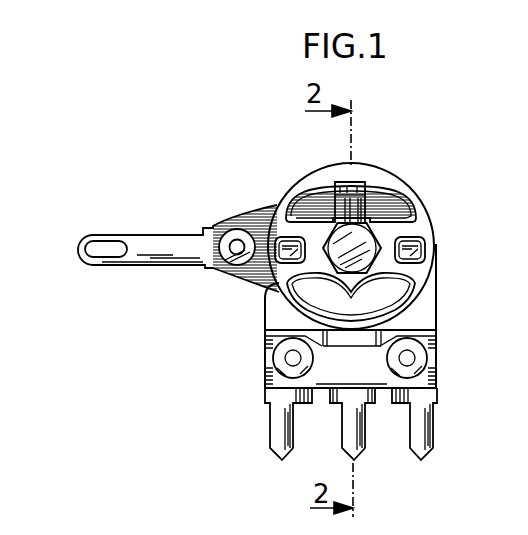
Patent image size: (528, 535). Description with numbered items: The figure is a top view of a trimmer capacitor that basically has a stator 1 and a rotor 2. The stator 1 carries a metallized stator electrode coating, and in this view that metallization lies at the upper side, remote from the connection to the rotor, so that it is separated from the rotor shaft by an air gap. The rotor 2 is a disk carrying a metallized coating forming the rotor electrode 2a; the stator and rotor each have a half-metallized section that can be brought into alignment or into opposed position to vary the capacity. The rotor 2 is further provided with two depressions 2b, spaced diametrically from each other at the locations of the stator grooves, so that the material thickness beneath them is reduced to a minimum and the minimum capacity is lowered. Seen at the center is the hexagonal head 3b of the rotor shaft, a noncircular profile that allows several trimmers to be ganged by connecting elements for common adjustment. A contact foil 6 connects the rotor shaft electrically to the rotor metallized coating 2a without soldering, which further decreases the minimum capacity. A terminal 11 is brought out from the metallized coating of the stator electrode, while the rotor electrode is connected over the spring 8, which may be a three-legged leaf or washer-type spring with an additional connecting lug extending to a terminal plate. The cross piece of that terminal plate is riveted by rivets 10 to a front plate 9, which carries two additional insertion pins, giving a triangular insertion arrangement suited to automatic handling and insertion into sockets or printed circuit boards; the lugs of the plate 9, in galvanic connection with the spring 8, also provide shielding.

The stator 1 is at (278, 313).
The rotor 2 is at (420, 274).
The rotor electrode 2a is at (387, 183).
The depressions 2b is at (417, 248).
The hexagonal head 3b is at (325, 238).
The contact foil 6 is at (331, 168).
The spring 8 is at (366, 437).
The front plate 9 is at (280, 383).
The rivets 10 is at (424, 353).
The terminal 11 is at (147, 243).